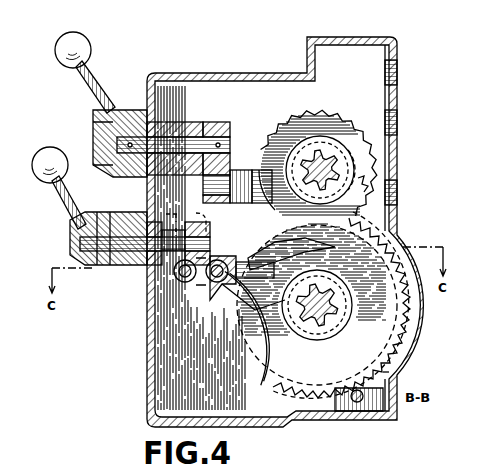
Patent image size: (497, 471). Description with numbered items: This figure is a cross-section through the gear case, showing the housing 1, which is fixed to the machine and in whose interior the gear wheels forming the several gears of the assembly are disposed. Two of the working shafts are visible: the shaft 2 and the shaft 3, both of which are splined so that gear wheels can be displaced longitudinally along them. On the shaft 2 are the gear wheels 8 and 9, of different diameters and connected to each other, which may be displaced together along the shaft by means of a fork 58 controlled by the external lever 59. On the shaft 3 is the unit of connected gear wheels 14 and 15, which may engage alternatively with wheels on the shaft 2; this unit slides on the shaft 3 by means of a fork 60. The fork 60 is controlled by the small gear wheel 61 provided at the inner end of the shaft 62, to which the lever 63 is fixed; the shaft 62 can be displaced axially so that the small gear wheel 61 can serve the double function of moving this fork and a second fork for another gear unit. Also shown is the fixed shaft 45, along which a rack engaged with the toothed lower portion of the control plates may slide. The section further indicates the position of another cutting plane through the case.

The housing 1 is at (237, 73).
The shaft 2 is at (345, 172).
The shaft 3 is at (330, 318).
The gear wheel 8 is at (356, 185).
The gear wheel 9 is at (333, 112).
The gear wheel 14 is at (278, 386).
The gear wheel 15 is at (268, 370).
The fixed shaft 45 is at (357, 411).
The fork 58 is at (258, 203).
The external lever 59 is at (90, 100).
The fork 60 is at (228, 290).
The small gear wheel 61 is at (200, 214).
The shaft 62 is at (150, 262).
The lever 63 is at (58, 203).